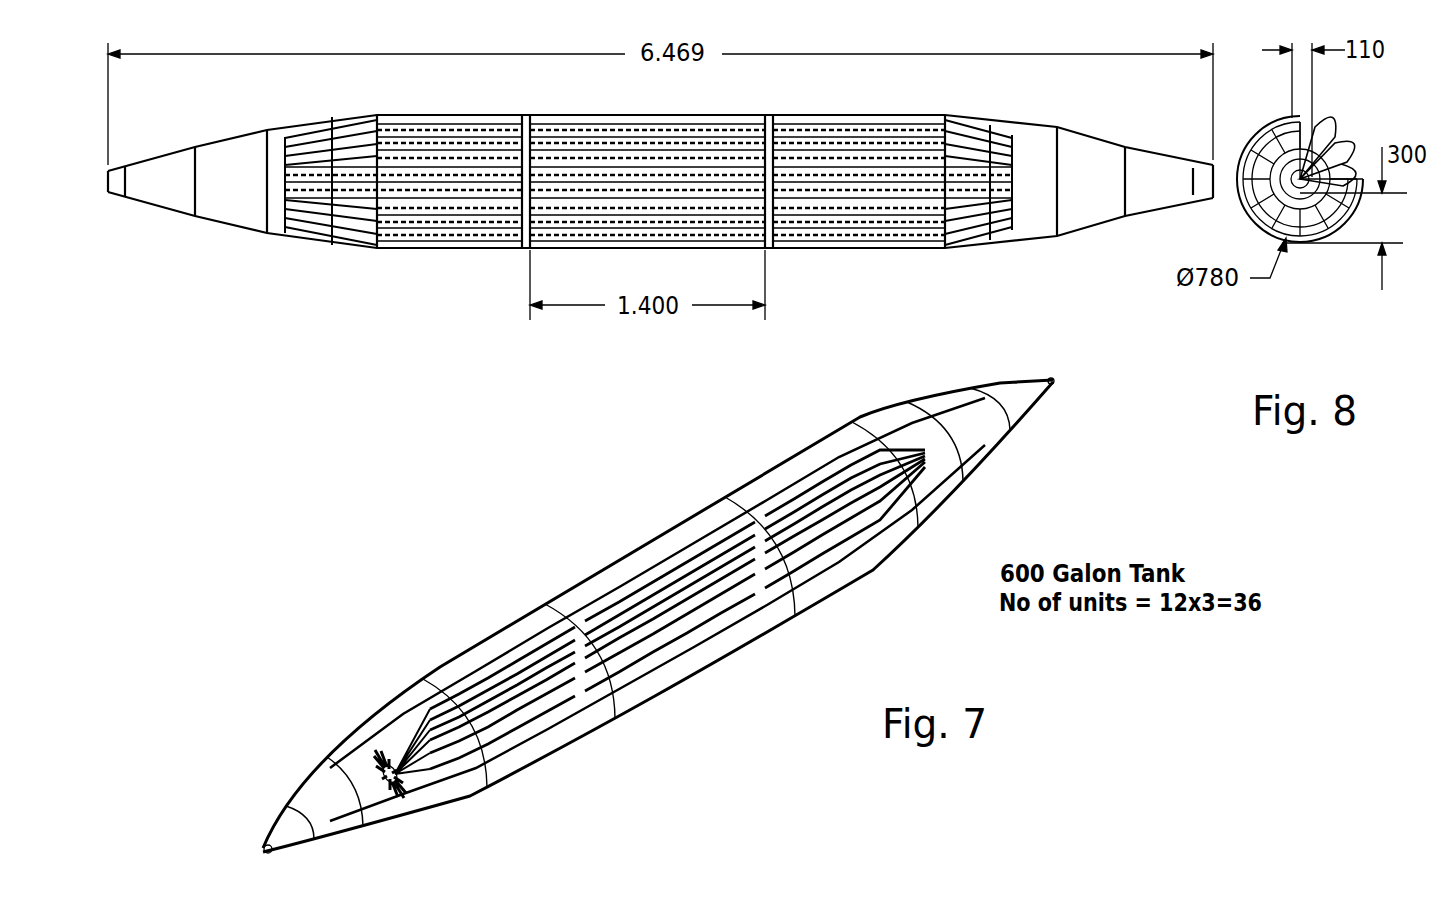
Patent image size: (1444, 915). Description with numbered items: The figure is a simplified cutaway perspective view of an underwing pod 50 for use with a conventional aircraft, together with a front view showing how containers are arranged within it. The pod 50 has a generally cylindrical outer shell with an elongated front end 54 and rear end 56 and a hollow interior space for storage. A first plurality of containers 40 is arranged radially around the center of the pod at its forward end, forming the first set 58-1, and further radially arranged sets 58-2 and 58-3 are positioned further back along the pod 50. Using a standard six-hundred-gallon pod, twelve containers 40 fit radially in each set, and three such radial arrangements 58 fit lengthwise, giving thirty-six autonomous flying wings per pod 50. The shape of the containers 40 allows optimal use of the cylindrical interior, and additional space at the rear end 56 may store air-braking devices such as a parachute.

In FIG. 8, the container 40 is at (1345, 122).
In FIG. 7, the underwing pod 50 is at (637, 527).
In FIG. 7, the front end 54 is at (966, 380).
In FIG. 7, the rear end 56 is at (325, 755).
In FIG. 8, the radial arrangement of containers 58 is at (1320, 248).
In FIG. 7, the first radial set of containers 58-1 is at (570, 728).
In FIG. 7, the second radial set of containers 58-2 is at (657, 627).
In FIG. 7, the third radial set of containers 58-3 is at (838, 528).